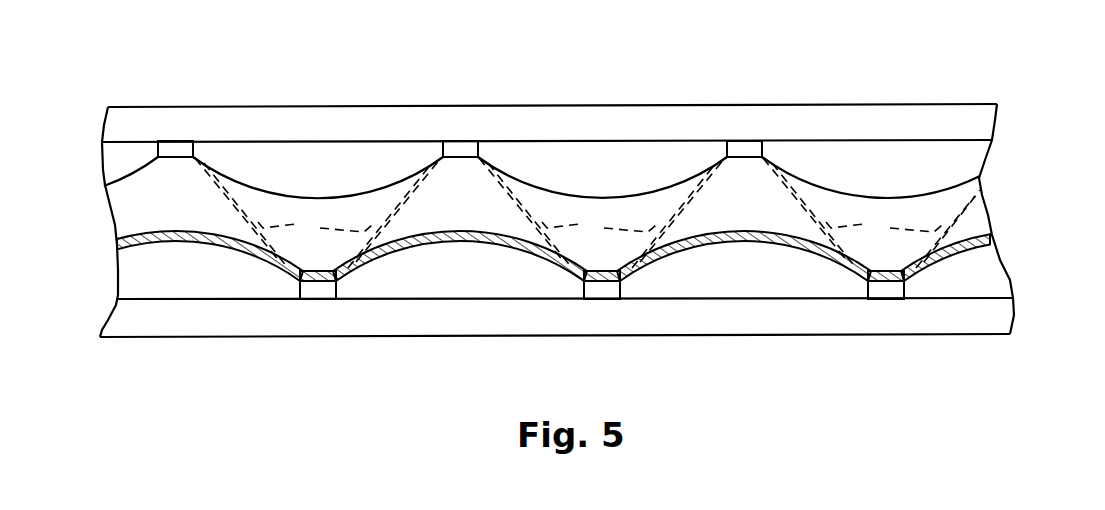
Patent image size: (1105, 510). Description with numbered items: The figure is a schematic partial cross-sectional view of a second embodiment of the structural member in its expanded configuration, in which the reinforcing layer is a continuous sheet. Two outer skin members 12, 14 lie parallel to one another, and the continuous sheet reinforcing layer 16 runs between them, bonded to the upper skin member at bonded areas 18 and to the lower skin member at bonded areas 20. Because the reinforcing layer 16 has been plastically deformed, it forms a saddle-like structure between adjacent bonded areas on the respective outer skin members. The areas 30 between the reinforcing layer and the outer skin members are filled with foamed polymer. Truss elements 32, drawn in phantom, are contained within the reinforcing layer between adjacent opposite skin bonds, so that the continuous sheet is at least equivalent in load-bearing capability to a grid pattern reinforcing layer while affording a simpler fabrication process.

The outer skin member 12 is at (968, 120).
The outer skin member 14 is at (978, 316).
The continuous sheet reinforcing layer 16 is at (987, 208).
The bonded area 18 is at (178, 147).
The bonded area 20 is at (318, 292).
The foamed polymer filled area 30 is at (337, 179).
The truss element 32 is at (587, 213).